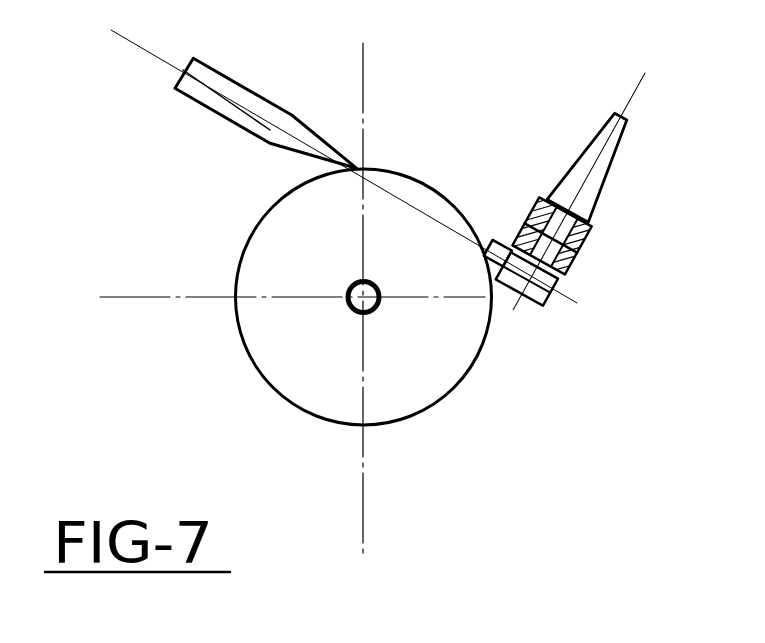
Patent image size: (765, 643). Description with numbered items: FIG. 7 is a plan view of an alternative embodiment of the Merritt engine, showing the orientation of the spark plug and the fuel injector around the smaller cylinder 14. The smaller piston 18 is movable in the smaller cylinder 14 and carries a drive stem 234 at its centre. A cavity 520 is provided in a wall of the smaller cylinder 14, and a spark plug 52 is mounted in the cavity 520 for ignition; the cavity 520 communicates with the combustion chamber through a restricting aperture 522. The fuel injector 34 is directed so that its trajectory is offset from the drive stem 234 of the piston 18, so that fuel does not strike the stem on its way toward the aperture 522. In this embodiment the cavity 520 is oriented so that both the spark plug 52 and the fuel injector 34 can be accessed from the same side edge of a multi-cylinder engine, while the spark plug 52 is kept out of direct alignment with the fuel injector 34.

The smaller cylinder 14 is at (465, 377).
The smaller piston 18 is at (277, 355).
The drive stem 234 is at (347, 293).
The fuel injector 34 is at (270, 132).
The spark plug 52 is at (590, 182).
The cavity 520 is at (543, 308).
The restricting aperture 522 is at (493, 250).